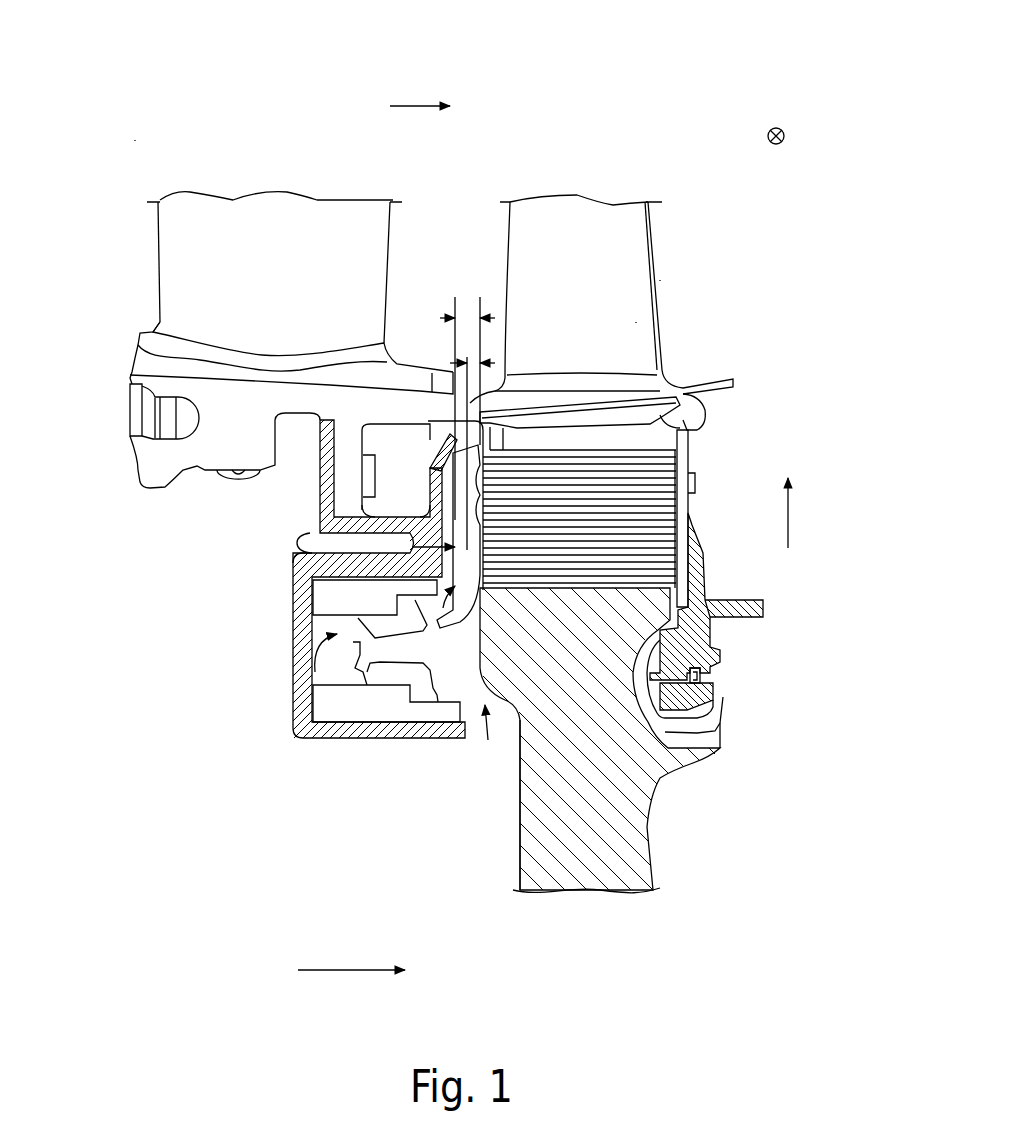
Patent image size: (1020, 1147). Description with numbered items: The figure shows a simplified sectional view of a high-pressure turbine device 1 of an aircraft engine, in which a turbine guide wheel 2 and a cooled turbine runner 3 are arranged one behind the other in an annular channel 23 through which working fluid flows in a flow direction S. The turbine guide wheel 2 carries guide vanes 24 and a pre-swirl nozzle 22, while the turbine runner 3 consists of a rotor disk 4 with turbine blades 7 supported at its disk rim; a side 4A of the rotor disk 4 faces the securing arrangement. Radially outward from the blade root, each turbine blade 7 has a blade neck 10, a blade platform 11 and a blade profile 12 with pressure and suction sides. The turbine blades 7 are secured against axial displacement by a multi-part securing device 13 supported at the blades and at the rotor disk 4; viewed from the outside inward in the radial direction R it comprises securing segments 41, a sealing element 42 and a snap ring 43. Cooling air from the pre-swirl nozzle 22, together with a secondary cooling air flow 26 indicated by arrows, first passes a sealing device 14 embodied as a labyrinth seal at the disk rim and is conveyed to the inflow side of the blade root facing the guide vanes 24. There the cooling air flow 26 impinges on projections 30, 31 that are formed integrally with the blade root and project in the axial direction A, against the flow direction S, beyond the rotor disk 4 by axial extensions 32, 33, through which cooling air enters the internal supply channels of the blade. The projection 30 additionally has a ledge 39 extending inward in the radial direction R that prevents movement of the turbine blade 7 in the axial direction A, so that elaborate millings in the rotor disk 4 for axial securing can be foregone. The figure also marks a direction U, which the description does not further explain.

The turbine device 1 is at (135, 140).
The turbine guide wheel 2 is at (152, 230).
The turbine runner 3 is at (498, 255).
The rotor disk 4 is at (525, 852).
The side of the rotor disk 4A is at (518, 818).
The turbine blade 7 is at (662, 280).
The blade neck 10 is at (668, 428).
The blade platform 11 is at (735, 383).
The blade profile 12 is at (636, 322).
The securing device 13 is at (706, 542).
The sealing device 14 is at (395, 655).
The pre-swirl nozzle 22 is at (400, 570).
The annular channel 23 is at (455, 397).
The guide vanes 24 is at (178, 272).
The cooling air flow 26 is at (330, 616).
The projection 30 is at (445, 545).
The projection 31 is at (470, 487).
The axial extension 32 is at (492, 362).
The axial extension 33 is at (492, 316).
The ledge 39 is at (455, 665).
The securing segments 41 is at (680, 473).
The sealing element 42 is at (715, 588).
The snap ring 43 is at (712, 686).
The flow direction S is at (420, 106).
The radial direction R is at (789, 506).
The circumferential direction U is at (782, 143).
The axial direction A is at (352, 970).